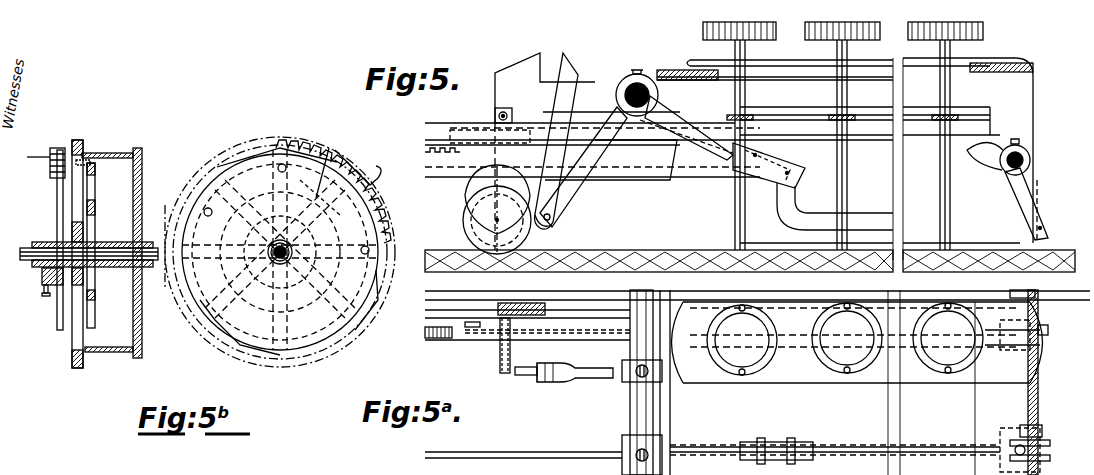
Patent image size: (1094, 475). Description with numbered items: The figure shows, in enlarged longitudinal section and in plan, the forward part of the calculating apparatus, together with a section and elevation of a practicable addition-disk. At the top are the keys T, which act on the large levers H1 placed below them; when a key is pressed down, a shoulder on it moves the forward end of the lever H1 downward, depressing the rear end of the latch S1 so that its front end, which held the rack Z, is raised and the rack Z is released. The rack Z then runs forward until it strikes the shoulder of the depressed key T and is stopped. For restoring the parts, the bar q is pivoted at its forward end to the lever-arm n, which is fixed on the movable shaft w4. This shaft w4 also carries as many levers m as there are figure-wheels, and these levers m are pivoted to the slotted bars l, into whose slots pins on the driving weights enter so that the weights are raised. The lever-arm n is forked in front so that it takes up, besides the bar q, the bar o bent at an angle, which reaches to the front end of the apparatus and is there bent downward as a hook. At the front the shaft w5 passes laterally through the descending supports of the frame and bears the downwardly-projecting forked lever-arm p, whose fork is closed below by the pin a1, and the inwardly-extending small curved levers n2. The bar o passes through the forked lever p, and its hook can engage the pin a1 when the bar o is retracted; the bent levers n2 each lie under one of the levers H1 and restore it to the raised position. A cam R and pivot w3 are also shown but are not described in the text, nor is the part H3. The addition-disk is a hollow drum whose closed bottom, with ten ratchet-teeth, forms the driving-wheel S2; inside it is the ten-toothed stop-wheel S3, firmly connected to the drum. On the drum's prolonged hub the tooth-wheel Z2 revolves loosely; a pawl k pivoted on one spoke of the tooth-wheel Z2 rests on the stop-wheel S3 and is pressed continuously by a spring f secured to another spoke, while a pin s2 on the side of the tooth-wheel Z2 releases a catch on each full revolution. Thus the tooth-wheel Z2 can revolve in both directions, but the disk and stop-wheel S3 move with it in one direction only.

In FIG. 5, the key T is at (912, 32).
In FIG. 5A, the key T is at (945, 358).
In FIG. 5B, the pin a1 is at (108, 358).
In FIG. 5, the pin a1 is at (850, 114).
In FIG. 5A, the pin a1 is at (856, 350).
In FIG. 5, the lever H1 is at (822, 134).
In FIG. 5A, the lever H1 is at (462, 344).
In FIG. 5, the rack Z is at (445, 178).
In FIG. 5A, the rack Z is at (448, 326).
In FIG. 5, the latch S1 is at (702, 150).
In FIG. 5, the bar q is at (714, 163).
In FIG. 5A, the bar q is at (566, 456).
In FIG. 5, the cam wheel R is at (465, 221).
In FIG. 5B, the pivot shaft w3 is at (292, 250).
In FIG. 5, the pivot shaft w3 is at (507, 114).
In FIG. 5A, the pivot shaft w3 is at (500, 368).
In FIG. 5, the bar l is at (570, 70).
In FIG. 5A, the bar l is at (522, 367).
In FIG. 5, the lever m is at (560, 187).
In FIG. 5A, the lever m is at (597, 372).
In FIG. 5, the movable shaft w4 is at (650, 93).
In FIG. 5A, the movable shaft w4 is at (637, 408).
In FIG. 5, the lever-arm n is at (775, 178).
In FIG. 5A, the lever-arm n is at (748, 440).
In FIG. 5, the bar o is at (862, 222).
In FIG. 5A, the bar o is at (863, 456).
In FIG. 5, the curved lever n2 is at (990, 168).
In FIG. 5A, the curved lever n2 is at (1006, 340).
In FIG. 5, the shaft w5 is at (1028, 160).
In FIG. 5A, the shaft w5 is at (1028, 291).
In FIG. 5, the forked lever-arm p is at (680, 248).
In FIG. 5A, the forked lever-arm p is at (1042, 440).
In FIG. 5B, the pawl k is at (92, 168).
In FIG. 5A, the pawl k is at (1019, 451).
In FIG. 5B, the tooth-wheel Z2 is at (90, 140).
In FIG. 5B, the pin s2 is at (208, 212).
In FIG. 5B, the driving-wheel S2 is at (142, 186).
In FIG. 5B, the arm H3 is at (60, 198).
In FIG. 5B, the stop-wheel S3 is at (92, 232).
In FIG. 5B, the spring f is at (353, 200).